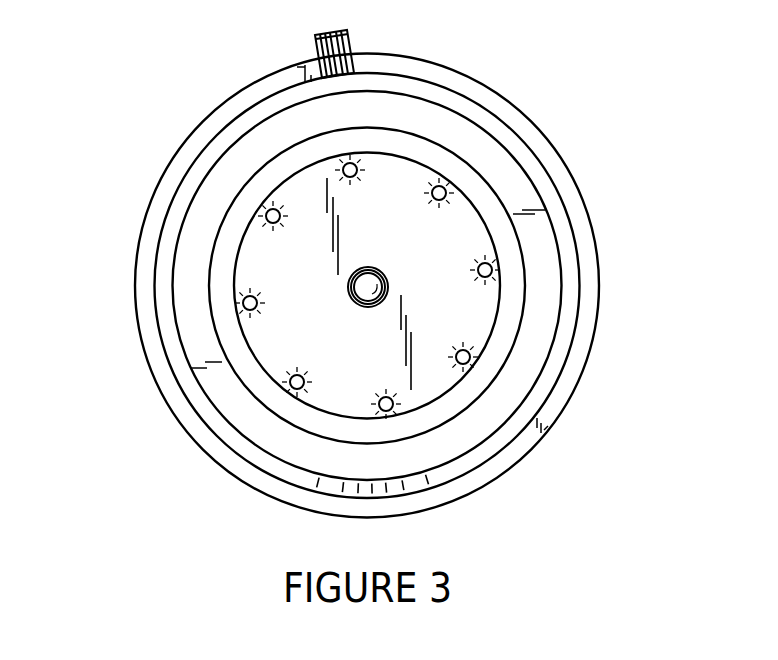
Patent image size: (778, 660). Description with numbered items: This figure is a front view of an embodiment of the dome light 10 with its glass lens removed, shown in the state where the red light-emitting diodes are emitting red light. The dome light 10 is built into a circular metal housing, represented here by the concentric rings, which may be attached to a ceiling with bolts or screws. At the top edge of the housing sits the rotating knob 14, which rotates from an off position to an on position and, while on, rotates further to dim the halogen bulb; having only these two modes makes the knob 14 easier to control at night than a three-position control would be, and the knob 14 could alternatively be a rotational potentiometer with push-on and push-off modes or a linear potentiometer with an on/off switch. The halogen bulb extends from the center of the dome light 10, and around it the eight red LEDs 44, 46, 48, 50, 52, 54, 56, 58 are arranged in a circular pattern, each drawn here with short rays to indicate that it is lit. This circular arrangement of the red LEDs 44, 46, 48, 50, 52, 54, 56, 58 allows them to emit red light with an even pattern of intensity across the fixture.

The dome light 10 is at (168, 70).
The rotating knob 14 is at (352, 46).
The red LED 44 is at (243, 298).
The red LED 46 is at (266, 209).
The red LED 48 is at (340, 168).
The red LED 50 is at (446, 187).
The red LED 52 is at (492, 264).
The red LED 54 is at (470, 349).
The red LED 56 is at (393, 403).
The red LED 58 is at (290, 392).